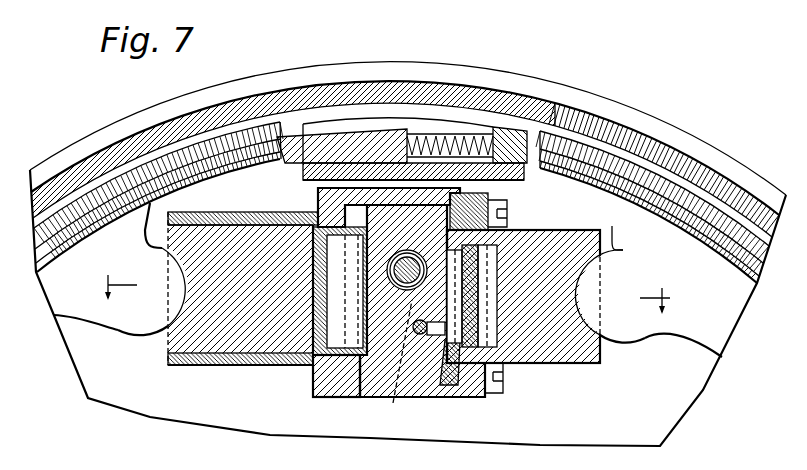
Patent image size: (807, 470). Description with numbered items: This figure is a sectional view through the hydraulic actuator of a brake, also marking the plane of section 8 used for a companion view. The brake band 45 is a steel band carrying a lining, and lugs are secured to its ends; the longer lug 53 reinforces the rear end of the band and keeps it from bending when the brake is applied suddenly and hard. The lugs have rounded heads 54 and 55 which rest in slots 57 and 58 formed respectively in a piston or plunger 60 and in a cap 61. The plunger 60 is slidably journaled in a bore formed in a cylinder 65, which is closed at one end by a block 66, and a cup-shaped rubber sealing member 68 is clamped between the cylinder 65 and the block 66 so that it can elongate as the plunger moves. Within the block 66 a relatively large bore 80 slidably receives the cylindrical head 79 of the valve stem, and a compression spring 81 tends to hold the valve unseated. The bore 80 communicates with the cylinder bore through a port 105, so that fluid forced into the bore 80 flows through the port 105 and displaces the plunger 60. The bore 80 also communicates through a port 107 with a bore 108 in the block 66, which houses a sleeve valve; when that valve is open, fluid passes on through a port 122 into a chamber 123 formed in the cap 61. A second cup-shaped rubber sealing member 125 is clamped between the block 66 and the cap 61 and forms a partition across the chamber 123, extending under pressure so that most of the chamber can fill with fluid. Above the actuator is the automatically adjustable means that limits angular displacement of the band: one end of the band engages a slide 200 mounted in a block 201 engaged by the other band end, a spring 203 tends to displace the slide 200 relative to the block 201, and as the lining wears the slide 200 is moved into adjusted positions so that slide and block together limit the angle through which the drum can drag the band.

The brake band 45 is at (763, 270).
The lug 53 is at (712, 326).
The slide 200 is at (326, 140).
The spring 203 is at (440, 137).
The block 201 is at (513, 133).
The plunger 60 is at (240, 230).
The cylinder 65 is at (240, 358).
The slot 57 is at (185, 277).
The rounded head 54 is at (150, 328).
The slot 58 is at (92, 316).
The bore 80 is at (322, 215).
The sealing member 125 is at (508, 230).
The port 107 is at (376, 391).
The bore 108 is at (398, 365).
The sealing member 68 is at (300, 356).
The port 105 is at (368, 258).
The block 66 is at (348, 388).
The compression spring 81 is at (393, 270).
The cylindrical head 79 is at (388, 282).
The port 122 is at (440, 334).
The chamber 123 is at (455, 347).
The cap 61 is at (542, 343).
The rounded head 55 is at (621, 277).
The section line 8 is at (386, 294).